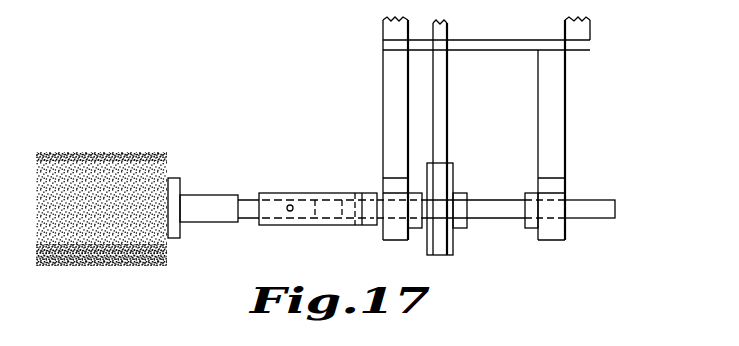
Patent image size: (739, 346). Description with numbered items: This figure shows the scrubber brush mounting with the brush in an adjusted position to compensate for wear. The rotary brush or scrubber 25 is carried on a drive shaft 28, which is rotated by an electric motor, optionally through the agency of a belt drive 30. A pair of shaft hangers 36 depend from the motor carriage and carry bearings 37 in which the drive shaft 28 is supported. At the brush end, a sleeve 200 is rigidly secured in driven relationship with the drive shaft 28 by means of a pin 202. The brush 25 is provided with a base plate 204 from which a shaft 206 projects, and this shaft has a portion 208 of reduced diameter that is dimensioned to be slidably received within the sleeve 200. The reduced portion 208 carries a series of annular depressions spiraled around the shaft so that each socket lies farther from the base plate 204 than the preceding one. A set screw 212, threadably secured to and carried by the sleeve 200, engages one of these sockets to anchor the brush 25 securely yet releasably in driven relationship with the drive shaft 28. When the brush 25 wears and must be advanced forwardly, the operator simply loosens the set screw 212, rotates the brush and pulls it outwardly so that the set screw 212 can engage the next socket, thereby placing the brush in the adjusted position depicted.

The rotary brush or scrubber 25 is at (91, 154).
The base plate 204 is at (173, 180).
The shaft 206 is at (216, 202).
The shaft portion of reduced diameter 208 is at (247, 208).
The sleeve 200 is at (303, 194).
The pin 202 is at (349, 196).
The set screw 212 is at (293, 211).
The shaft hangers 36 is at (387, 90).
The bearings 37 is at (396, 233).
The belt drive 30 is at (443, 90).
The drive shaft 28 is at (482, 210).